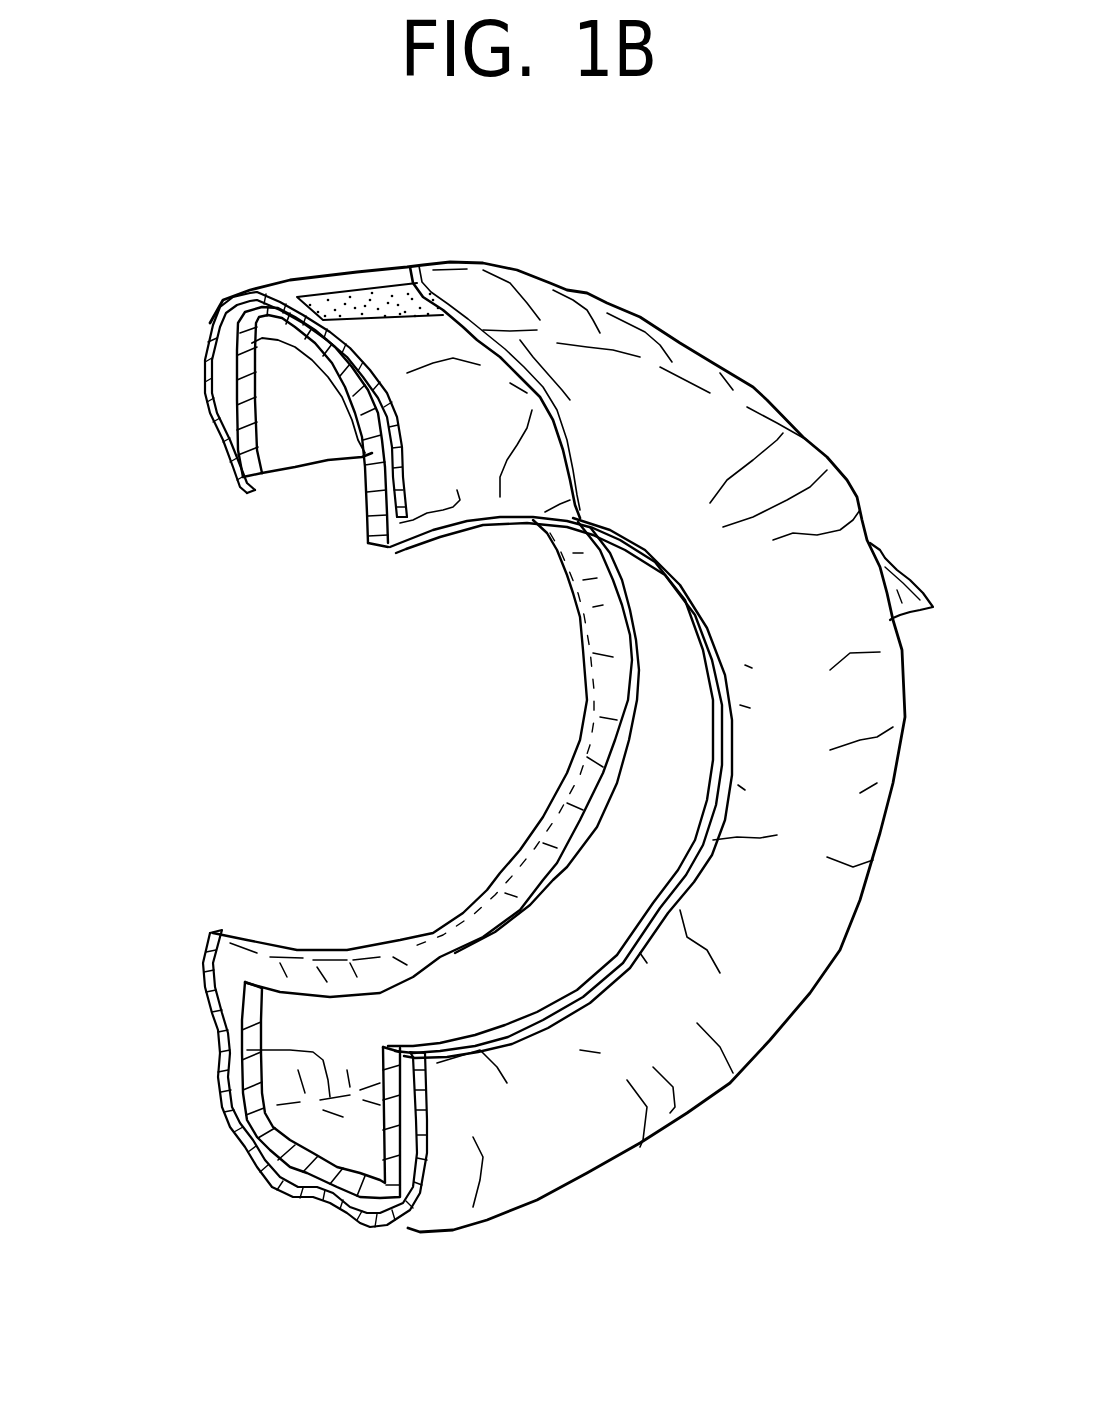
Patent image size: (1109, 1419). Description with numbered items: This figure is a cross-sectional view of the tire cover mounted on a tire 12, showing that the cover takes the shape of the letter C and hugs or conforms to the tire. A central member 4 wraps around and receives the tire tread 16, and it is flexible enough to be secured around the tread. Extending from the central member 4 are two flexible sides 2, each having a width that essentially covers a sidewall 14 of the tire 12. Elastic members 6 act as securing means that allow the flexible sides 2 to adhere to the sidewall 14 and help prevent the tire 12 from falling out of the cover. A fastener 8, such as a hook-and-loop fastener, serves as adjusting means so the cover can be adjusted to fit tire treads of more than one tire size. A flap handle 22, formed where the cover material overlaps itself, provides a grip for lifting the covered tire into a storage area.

The flexible sides 2 is at (827, 807).
The central member 4 is at (675, 358).
The elastic members 6 is at (610, 997).
The fastener 8 is at (450, 258).
The tire 12 is at (247, 1051).
The sidewall 14 is at (247, 493).
The tire tread 16 is at (247, 1125).
The flap handles 22 is at (910, 583).